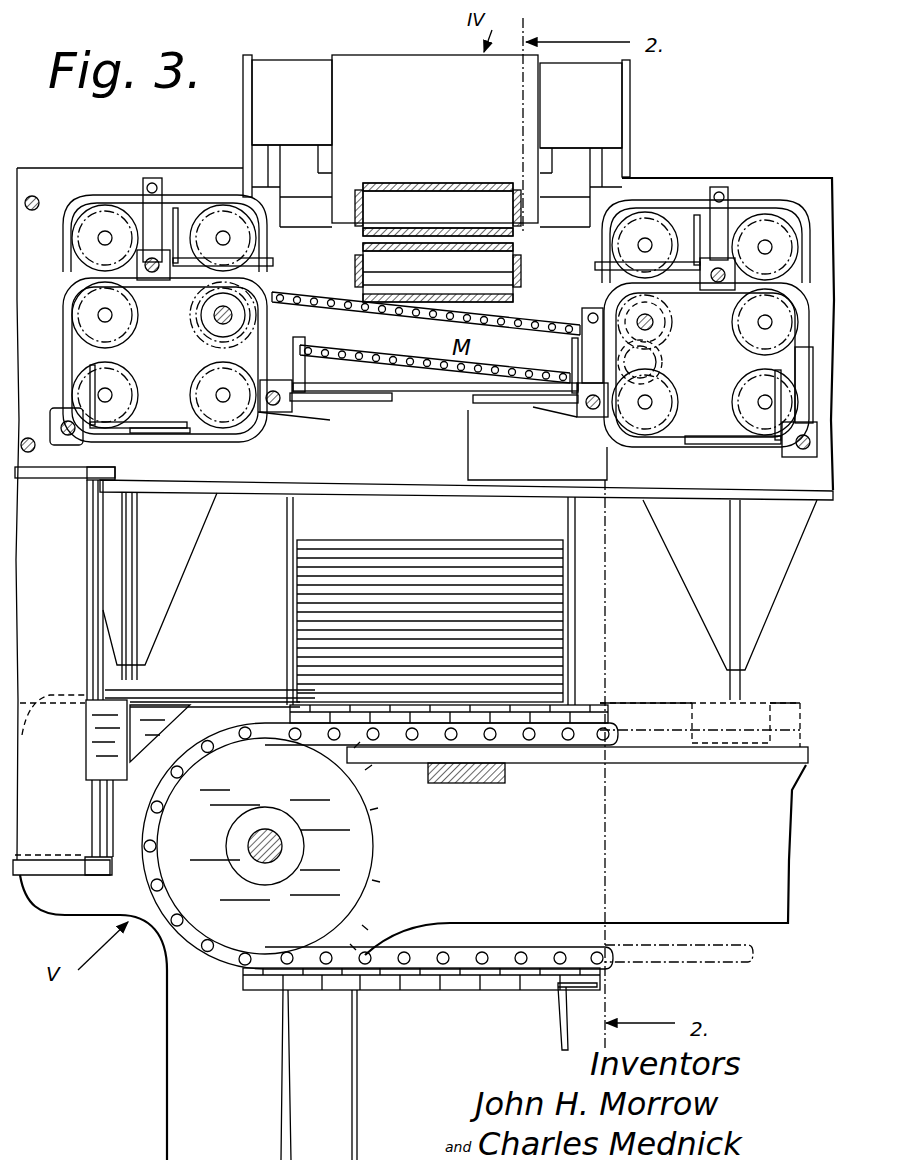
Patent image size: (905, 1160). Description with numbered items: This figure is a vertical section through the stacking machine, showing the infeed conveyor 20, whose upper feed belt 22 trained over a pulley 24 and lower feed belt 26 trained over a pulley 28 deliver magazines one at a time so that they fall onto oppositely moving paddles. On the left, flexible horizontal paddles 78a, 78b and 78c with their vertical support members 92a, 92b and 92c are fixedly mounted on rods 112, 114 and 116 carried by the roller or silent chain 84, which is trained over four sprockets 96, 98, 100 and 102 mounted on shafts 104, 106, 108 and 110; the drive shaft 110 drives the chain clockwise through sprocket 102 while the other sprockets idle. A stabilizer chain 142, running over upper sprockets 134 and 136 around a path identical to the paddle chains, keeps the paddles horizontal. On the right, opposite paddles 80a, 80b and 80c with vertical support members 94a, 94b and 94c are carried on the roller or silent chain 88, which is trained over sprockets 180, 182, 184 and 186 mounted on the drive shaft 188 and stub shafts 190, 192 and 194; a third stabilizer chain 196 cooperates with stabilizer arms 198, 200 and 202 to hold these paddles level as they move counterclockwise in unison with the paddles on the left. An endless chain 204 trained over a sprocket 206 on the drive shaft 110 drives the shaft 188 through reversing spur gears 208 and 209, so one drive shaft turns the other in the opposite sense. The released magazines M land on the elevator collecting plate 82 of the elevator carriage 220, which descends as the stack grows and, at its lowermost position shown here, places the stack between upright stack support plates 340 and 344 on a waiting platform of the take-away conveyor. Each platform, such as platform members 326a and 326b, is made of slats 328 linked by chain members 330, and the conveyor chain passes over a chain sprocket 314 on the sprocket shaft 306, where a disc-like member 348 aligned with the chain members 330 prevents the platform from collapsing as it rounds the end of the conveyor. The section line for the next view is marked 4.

The conveyor 20 is at (438, 184).
The upper feed belt 22 is at (396, 228).
The pulley 24 is at (470, 218).
The lower feed belt 26 is at (410, 250).
The pulley 28 is at (438, 272).
The sprocket 136 is at (92, 212).
The roller or silent chain 142 is at (125, 196).
The rod 116 is at (133, 264).
The sprocket 134 is at (224, 212).
The vertical support member 92b is at (180, 212).
The section line 4 is at (260, 232).
The sprocket 96 is at (82, 316).
The shaft 104 is at (108, 310).
The drive shaft 110 is at (213, 316).
The sprocket 206 is at (167, 336).
The shaft 106 is at (98, 390).
The shaft 108 is at (264, 432).
The vertical support member 92c is at (96, 378).
The sprocket 98 is at (122, 425).
The paddle 78c is at (168, 436).
The sprocket 100 is at (238, 420).
The rod 114 is at (68, 437).
The stabilizer chain 196 is at (746, 200).
The stabilizer arm 200 is at (720, 186).
The vertical support member 94b is at (696, 212).
The paddle supporting member 80b is at (600, 265).
The sprocket 186 is at (785, 312).
The drive shaft 188 is at (660, 322).
The reversing spur gear 209 is at (665, 338).
The reversing spur gear 208 is at (664, 362).
The shaft 194 is at (774, 323).
The shaft 192 is at (762, 400).
The shaft 190 is at (632, 432).
The paddle supporting member 80c is at (700, 420).
The vertical support member 94c is at (762, 446).
The stabilizer arm 202 is at (801, 450).
The sprocket 184 is at (696, 448).
The sprocket 182 is at (612, 422).
The roller or silent chain 88 is at (622, 434).
The sprocket 102 is at (276, 294).
The sprocket 180 is at (616, 298).
The endless chain 204 is at (437, 360).
The vertical support member 92a is at (306, 348).
The rod 112 is at (302, 392).
The stabilizer arm 198 is at (580, 361).
The vertical support member 94a is at (585, 348).
The paddle 78a is at (376, 403).
The paddle 78b is at (280, 268).
The paddle supporting member 80a is at (505, 405).
The upright stack support plate 340 is at (577, 572).
The upright stack support plate 344 is at (272, 548).
The roller or silent chain 84 is at (242, 497).
The magazines M is at (512, 545).
The platform member 326a is at (535, 700).
The slat 328 is at (390, 715).
The elevator collecting plate 82 is at (231, 702).
The elevator carriage 220 is at (116, 716).
The chain member 330 is at (432, 772).
The disc-like member 348 is at (308, 920).
The sprocket shaft 306 is at (252, 858).
The chain sprocket 314 is at (150, 887).
The platform member 326b is at (458, 996).